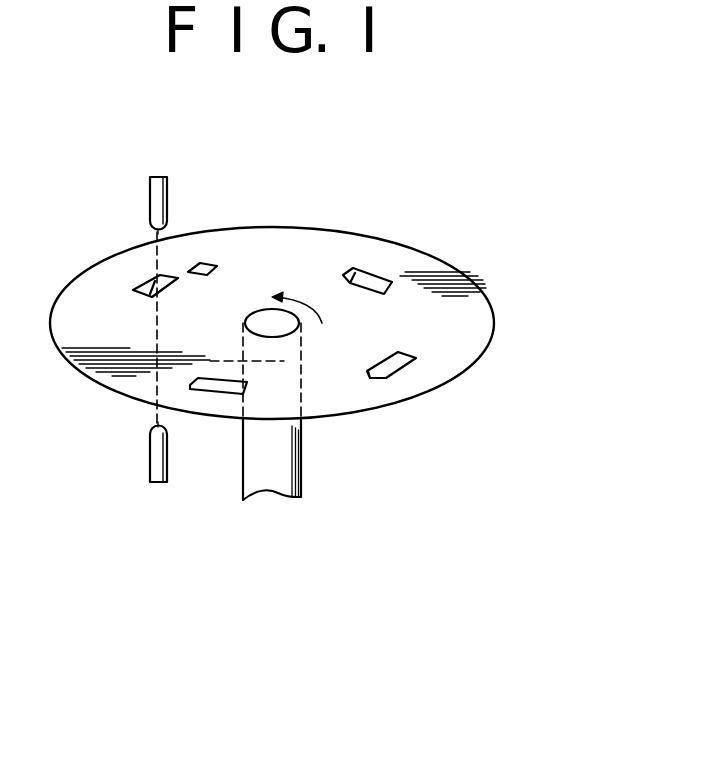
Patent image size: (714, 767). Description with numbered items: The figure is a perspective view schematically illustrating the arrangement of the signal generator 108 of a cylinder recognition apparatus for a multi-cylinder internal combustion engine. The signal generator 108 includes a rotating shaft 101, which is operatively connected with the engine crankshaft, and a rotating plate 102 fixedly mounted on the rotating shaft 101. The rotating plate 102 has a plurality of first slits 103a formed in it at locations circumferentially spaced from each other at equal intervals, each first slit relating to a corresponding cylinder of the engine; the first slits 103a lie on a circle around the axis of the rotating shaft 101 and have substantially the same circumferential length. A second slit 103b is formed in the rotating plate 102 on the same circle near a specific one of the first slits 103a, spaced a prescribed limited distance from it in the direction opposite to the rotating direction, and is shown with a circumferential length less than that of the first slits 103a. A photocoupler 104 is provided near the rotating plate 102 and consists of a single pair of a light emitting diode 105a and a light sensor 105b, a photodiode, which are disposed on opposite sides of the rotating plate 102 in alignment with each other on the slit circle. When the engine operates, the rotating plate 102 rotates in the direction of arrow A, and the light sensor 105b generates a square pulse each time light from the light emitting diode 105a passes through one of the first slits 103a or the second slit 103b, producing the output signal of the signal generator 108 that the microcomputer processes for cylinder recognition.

The rotating shaft 101 is at (303, 456).
The rotating plate 102 is at (489, 342).
The first slits 103a is at (140, 284).
The second slit 103b is at (219, 265).
The photocoupler 104 is at (189, 185).
The light emitting diode 105a is at (168, 197).
The light sensor 105b is at (168, 468).
The signal generator 108 is at (382, 442).
The arrow indicating rotating direction A is at (320, 316).